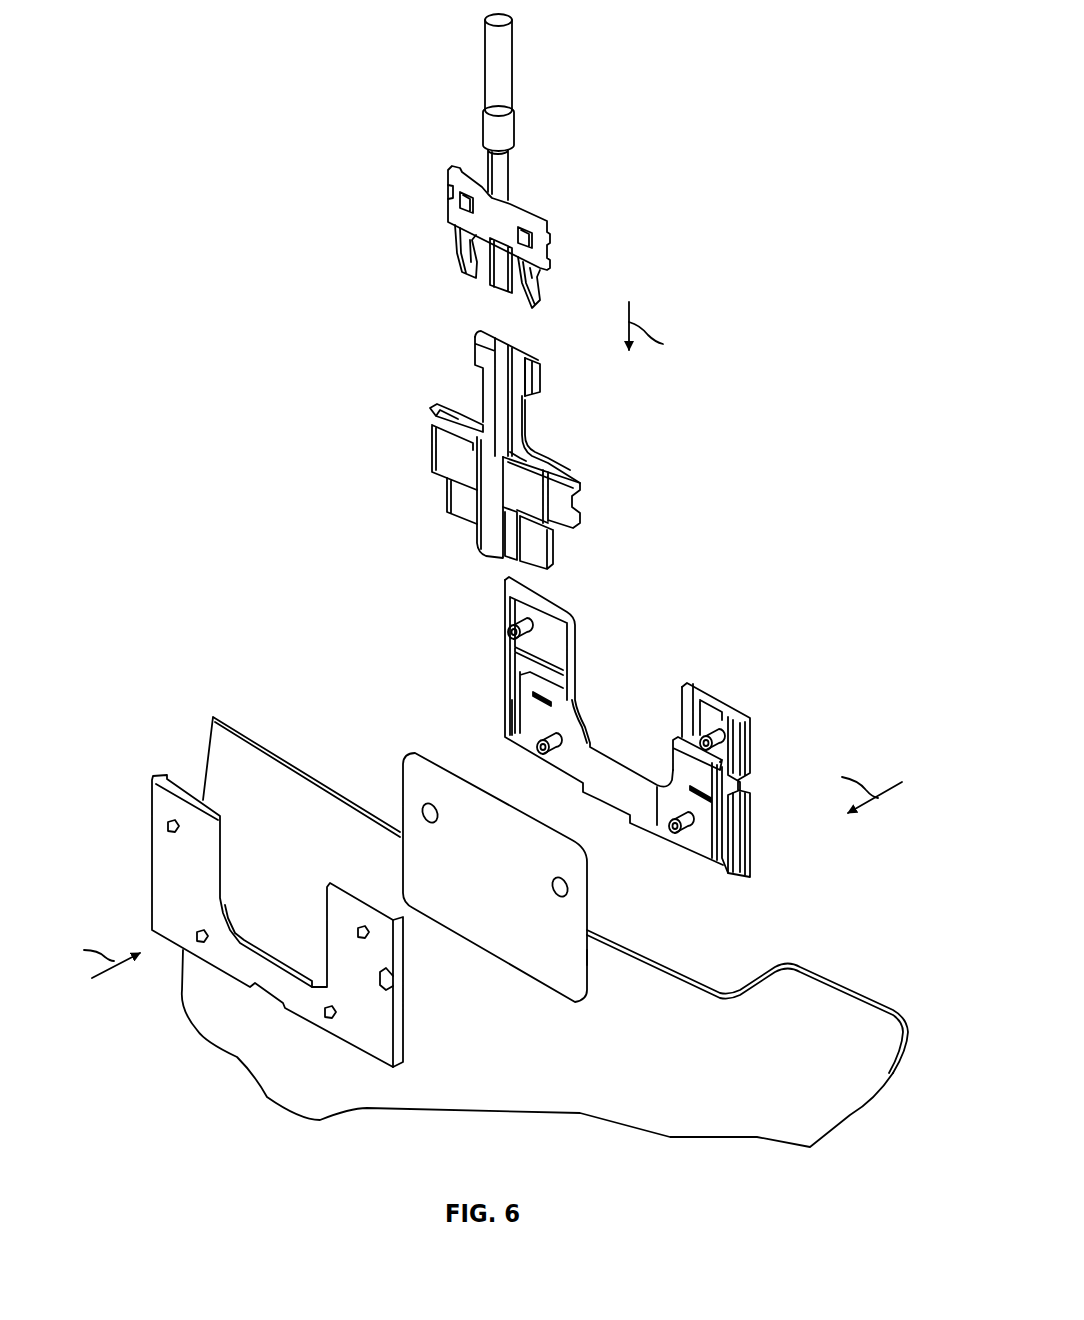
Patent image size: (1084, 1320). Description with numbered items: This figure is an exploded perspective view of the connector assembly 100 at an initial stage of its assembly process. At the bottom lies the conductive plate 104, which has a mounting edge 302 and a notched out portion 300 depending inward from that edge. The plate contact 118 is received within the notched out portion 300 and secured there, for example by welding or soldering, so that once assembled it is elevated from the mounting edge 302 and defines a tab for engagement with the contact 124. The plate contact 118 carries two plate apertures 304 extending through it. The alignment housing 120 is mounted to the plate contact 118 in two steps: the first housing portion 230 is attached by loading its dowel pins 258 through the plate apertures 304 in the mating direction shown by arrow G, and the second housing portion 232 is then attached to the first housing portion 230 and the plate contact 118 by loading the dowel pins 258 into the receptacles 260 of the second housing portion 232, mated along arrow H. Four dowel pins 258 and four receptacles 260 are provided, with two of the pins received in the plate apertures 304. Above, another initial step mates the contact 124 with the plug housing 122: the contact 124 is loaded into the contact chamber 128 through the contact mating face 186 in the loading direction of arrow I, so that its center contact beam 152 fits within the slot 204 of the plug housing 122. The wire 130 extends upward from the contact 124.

The connector assembly 100 is at (338, 104).
The conductive plate 104 is at (837, 1002).
The plate contact 118 is at (413, 762).
The alignment housing 120 is at (722, 671).
The plug housing 122 is at (549, 468).
The contact 124 is at (532, 221).
The contact chamber 128 is at (523, 457).
The wire 130 is at (504, 73).
The center contact beam 152 is at (500, 277).
The contact mating face 186 is at (462, 408).
The slot 204 is at (503, 357).
The first housing portion 230 is at (728, 712).
The second housing portion 232 is at (162, 807).
The dowel pins 258 is at (508, 720).
The receptacles 260 is at (173, 829).
The notched out portion 300 is at (576, 958).
The mounting edge 302 is at (670, 968).
The plate apertures 304 is at (570, 883).